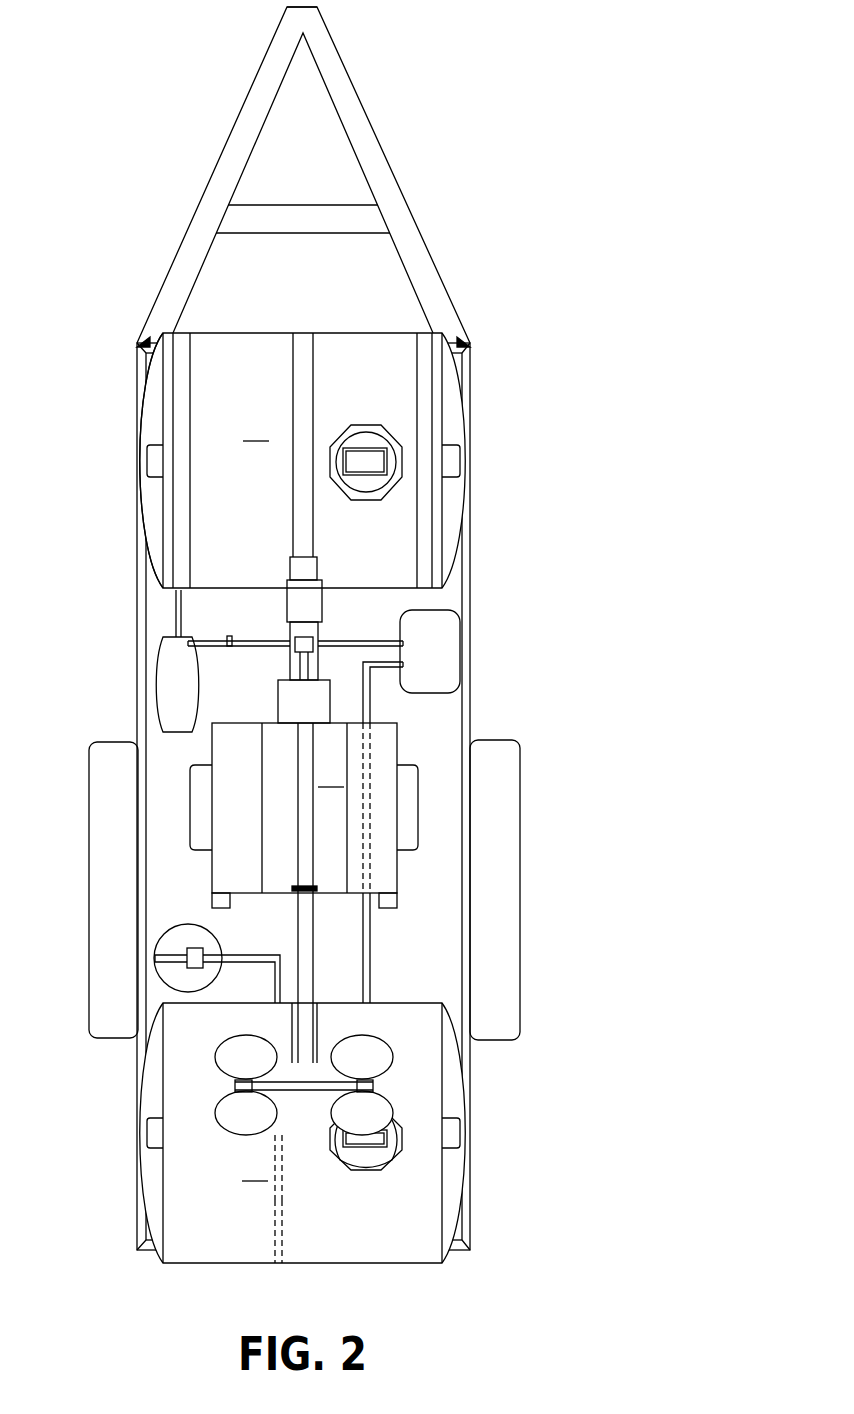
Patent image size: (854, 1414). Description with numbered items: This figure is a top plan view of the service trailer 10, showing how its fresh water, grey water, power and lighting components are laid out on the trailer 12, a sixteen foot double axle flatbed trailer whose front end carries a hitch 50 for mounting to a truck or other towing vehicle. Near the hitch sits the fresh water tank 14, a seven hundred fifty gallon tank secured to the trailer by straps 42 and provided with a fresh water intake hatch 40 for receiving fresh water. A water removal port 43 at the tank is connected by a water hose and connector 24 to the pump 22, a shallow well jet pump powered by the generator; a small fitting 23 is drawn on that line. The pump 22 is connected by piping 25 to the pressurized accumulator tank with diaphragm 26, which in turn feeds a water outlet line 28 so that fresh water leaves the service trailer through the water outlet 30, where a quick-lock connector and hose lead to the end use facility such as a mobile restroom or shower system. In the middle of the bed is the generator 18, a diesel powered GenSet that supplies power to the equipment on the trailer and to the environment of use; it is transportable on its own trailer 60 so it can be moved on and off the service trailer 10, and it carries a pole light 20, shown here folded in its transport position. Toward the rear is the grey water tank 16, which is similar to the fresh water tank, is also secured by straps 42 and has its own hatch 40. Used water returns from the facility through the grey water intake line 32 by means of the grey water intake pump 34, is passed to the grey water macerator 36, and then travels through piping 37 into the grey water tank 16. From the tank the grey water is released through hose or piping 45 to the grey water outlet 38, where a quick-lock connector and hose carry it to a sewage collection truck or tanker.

The service trailer 10 is at (184, 138).
The trailer 12 is at (390, 197).
The fresh water tank 14 is at (303, 460).
The grey water tank 16 is at (303, 1133).
The generator 18 is at (304, 815).
The light 20 is at (313, 945).
The pump 22 is at (168, 675).
The valve 23 is at (230, 638).
The water hose and connector 24 is at (175, 608).
The piping 25 is at (358, 638).
The pressurized accumulator tank with diaphragm 26 is at (445, 652).
The water outlet line 28 is at (370, 987).
The water outlet 30 is at (368, 1263).
The grey water intake line 32 is at (157, 953).
The grey water intake pump 34 is at (185, 960).
The grey water macerator 36 is at (183, 977).
The piping 37 is at (250, 955).
The grey water outlet 38 is at (275, 1263).
The fresh water intake hatch 40 is at (382, 480).
The straps 42 is at (428, 337).
The water removal port 43 is at (165, 592).
The piping 45 is at (273, 1218).
The hitch 50 is at (300, 14).
The trailer 60 is at (285, 705).